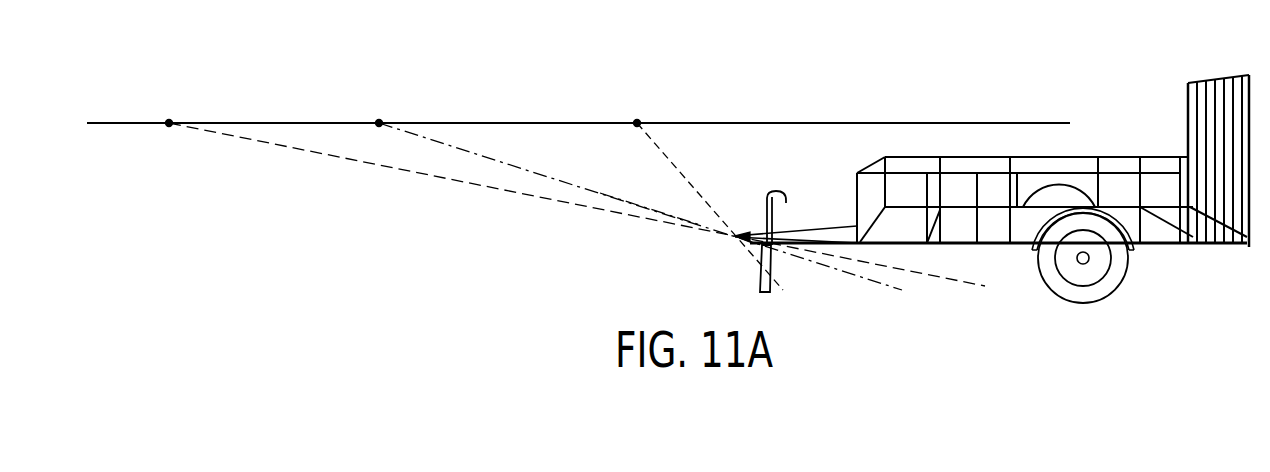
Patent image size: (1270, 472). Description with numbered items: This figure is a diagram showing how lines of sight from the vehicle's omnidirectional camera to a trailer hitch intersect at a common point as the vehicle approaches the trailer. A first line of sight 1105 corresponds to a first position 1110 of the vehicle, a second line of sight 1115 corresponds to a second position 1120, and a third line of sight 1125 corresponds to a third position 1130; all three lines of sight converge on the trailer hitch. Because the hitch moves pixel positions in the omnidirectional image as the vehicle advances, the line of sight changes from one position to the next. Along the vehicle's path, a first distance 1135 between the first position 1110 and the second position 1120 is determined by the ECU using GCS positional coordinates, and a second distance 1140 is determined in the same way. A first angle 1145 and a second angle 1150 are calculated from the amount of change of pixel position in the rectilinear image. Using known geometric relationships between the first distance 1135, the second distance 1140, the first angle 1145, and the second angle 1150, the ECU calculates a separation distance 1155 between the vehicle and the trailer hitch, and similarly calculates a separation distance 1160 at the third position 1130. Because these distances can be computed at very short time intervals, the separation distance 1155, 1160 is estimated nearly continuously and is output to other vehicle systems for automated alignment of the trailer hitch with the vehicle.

The first line of sight 1105 is at (418, 173).
The first position 1110 is at (169, 120).
The second line of sight 1115 is at (522, 167).
The second position 1120 is at (380, 120).
The third line of sight 1125 is at (673, 164).
The third position 1130 is at (637, 120).
The first distance 1135 is at (274, 108).
The second distance 1140 is at (508, 110).
The first angle 1145 is at (215, 122).
The second angle 1150 is at (458, 122).
The separation distance 1155 is at (650, 197).
The separation distance 1160 is at (779, 203).